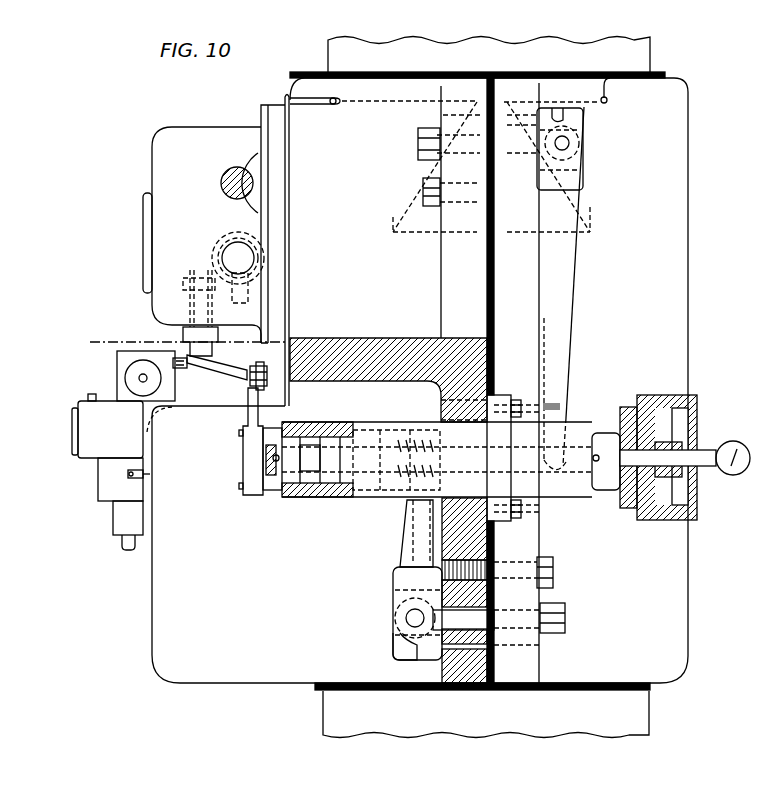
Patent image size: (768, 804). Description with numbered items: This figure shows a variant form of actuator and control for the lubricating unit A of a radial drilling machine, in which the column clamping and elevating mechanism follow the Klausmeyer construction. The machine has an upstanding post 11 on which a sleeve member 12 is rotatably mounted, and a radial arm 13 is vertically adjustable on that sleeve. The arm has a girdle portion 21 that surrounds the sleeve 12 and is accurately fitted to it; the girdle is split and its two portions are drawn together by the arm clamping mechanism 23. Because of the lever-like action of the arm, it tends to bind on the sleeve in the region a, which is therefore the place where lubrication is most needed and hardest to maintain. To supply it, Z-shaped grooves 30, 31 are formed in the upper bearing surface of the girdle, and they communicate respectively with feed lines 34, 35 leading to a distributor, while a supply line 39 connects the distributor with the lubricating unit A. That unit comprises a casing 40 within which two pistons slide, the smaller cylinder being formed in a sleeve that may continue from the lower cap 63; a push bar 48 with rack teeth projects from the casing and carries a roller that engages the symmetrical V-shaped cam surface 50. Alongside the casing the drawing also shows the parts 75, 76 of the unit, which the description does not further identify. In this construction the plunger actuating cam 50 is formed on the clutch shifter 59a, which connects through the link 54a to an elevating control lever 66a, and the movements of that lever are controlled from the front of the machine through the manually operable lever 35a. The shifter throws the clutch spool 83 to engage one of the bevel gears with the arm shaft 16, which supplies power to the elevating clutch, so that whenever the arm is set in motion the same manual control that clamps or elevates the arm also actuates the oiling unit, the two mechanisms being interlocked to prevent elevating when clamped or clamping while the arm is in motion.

The sleeve member 12 is at (648, 54).
The radial arm 13 is at (163, 589).
The arm shaft 16 is at (248, 258).
The girdle portion 21 is at (676, 300).
The arm clamping mechanism 23 is at (577, 243).
The Z-shaped groove 30 is at (582, 197).
The Z-shaped groove 31 is at (418, 190).
The feed line 34 is at (637, 76).
The feed line 35 is at (304, 104).
The manually operable lever 35a is at (733, 442).
The supply line 39 is at (291, 306).
The casing 40 is at (105, 486).
The push bar 48 is at (163, 414).
The cam surface 50 is at (183, 352).
The link 54a is at (268, 391).
The clutch shifter 59a is at (212, 369).
The lower cap 63 is at (114, 522).
The elevating control lever 66a is at (250, 420).
The terminal 75 is at (91, 397).
The solenoid 76 is at (77, 432).
The clutch spool 83 is at (212, 247).
The upstanding post 11 is at (99, 338).
The binding region a is at (494, 72).
The lubricating unit A is at (80, 466).